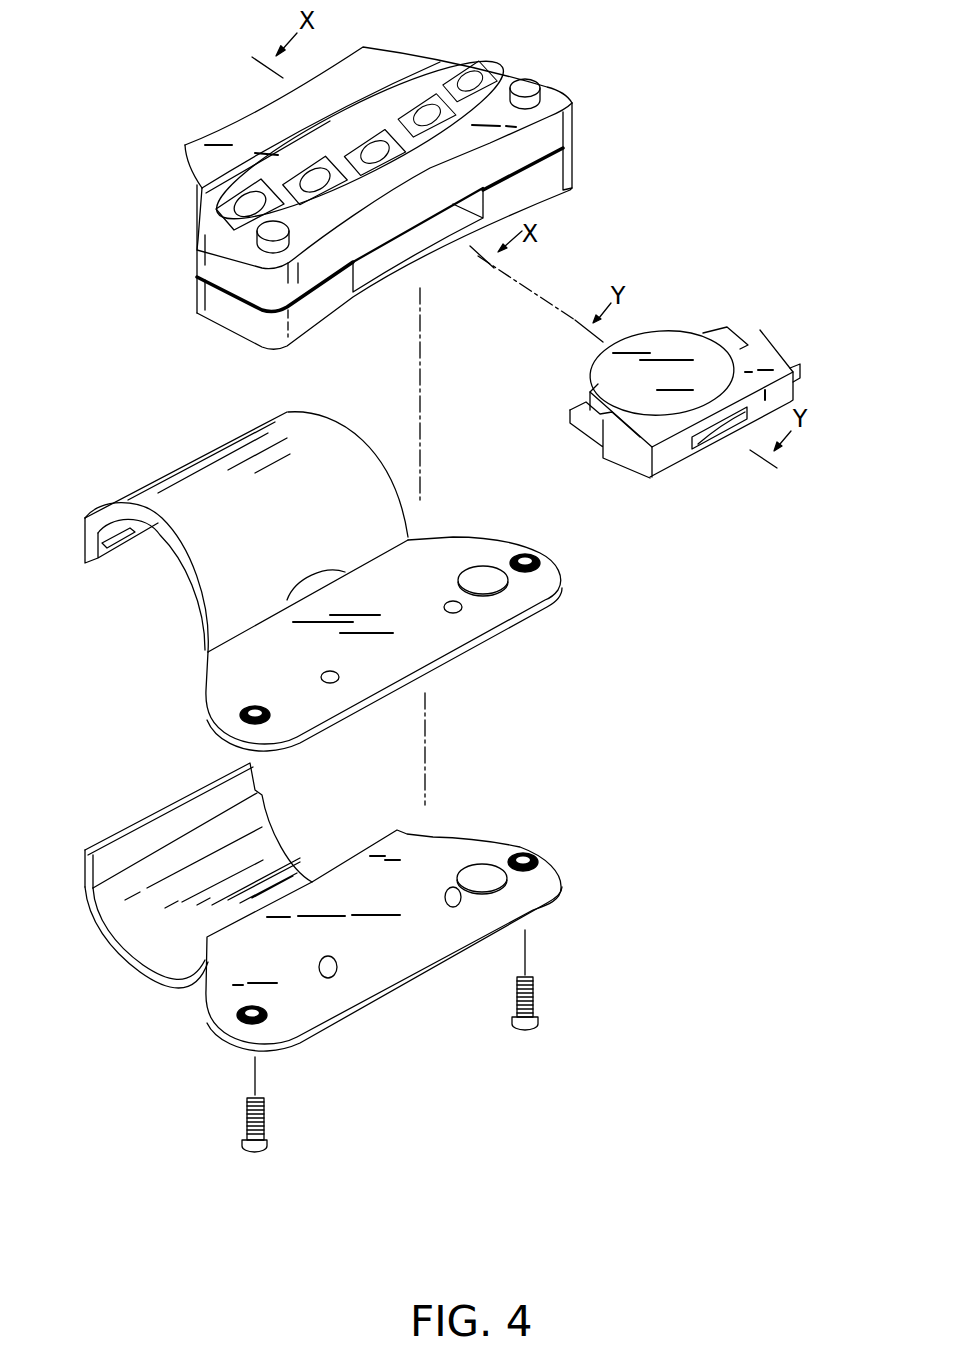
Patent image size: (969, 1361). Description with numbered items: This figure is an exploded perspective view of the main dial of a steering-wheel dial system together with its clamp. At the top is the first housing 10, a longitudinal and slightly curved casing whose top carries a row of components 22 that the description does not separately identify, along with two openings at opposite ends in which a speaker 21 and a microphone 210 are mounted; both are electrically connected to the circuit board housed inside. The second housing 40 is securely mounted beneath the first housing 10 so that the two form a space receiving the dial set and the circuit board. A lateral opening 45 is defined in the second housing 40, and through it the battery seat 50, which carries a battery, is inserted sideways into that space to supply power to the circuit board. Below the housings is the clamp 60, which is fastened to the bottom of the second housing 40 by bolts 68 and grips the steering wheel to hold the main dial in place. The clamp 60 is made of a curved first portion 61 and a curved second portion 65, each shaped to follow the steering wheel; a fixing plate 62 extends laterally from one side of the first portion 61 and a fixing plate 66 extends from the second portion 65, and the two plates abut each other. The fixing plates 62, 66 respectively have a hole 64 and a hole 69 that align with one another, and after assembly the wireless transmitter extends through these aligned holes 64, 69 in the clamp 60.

The first housing 10 is at (371, 138).
The key buttons 22 is at (488, 72).
The speaker 21 is at (545, 88).
The microphone 210 is at (257, 250).
The second housing 40 is at (414, 226).
The lateral opening 45 is at (403, 250).
The battery seat 50 is at (757, 358).
The clamp 60 is at (445, 806).
The first portion 61 is at (203, 480).
The fixing plate 62 is at (384, 625).
The hole 64 is at (487, 580).
The second portion 65 is at (133, 967).
The fixing plate 66 is at (384, 919).
The hole 69 is at (493, 880).
The bolts 68 is at (538, 1022).